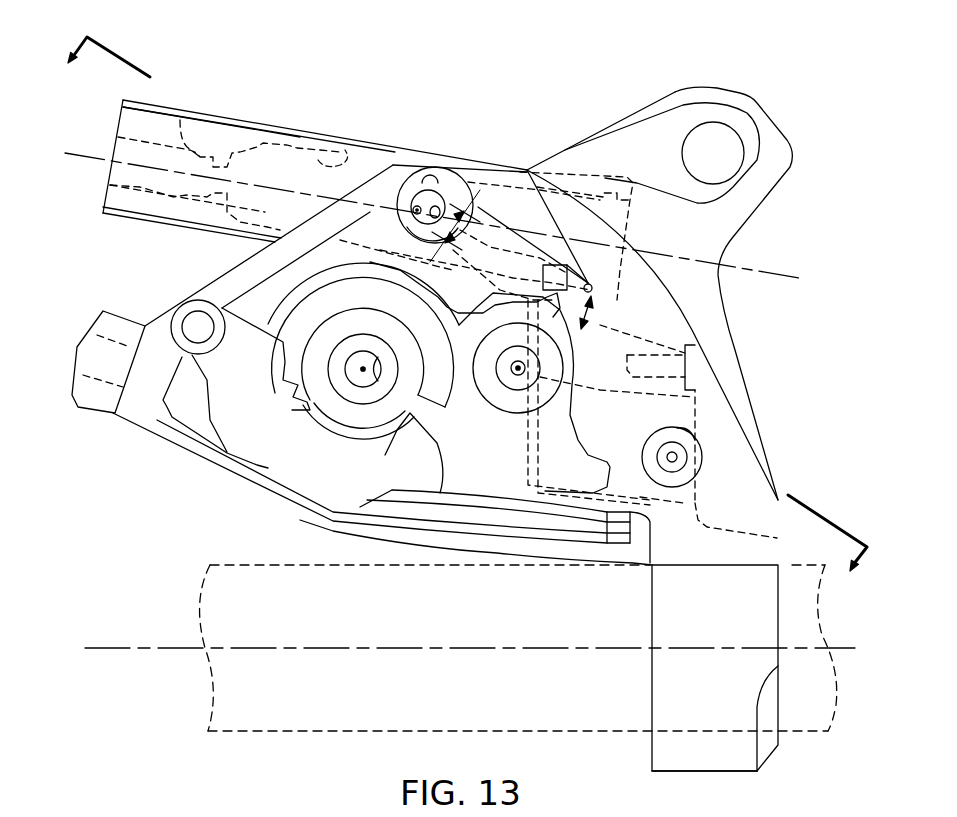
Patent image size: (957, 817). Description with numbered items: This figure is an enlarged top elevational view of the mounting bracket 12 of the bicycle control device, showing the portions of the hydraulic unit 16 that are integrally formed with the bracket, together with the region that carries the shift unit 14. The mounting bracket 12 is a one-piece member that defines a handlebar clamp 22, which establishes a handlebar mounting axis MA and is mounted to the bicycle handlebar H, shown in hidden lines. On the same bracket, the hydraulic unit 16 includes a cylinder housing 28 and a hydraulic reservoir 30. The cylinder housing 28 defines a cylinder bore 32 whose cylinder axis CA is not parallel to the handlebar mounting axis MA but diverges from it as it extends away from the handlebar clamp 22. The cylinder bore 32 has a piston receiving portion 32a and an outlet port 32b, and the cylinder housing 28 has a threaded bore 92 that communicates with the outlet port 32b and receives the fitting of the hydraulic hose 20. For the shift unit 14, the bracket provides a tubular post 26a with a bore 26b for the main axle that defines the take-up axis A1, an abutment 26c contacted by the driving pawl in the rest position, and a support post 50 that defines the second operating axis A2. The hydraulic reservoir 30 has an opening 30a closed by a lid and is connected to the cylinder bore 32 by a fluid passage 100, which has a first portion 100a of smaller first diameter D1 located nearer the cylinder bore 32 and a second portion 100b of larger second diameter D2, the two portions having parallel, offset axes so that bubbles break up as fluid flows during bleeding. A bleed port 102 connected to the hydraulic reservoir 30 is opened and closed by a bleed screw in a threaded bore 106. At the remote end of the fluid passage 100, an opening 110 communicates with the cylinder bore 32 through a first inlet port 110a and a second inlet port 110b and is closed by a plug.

The mounting bracket 12 is at (640, 683).
The shift unit 14 is at (458, 323).
The hydraulic unit 16 is at (225, 104).
The hydraulic hose 20 is at (197, 463).
The handlebar clamp 22 is at (715, 773).
The tubular post 26a is at (337, 373).
The bore 26b is at (373, 380).
The abutment 26c is at (297, 412).
The cylinder housing 28 is at (258, 123).
The hydraulic reservoir 30 is at (678, 520).
The opening 30a is at (698, 391).
The cylinder bore 32 is at (302, 142).
The piston receiving portion 32a is at (344, 160).
The outlet port 32b is at (180, 120).
The support post 50 is at (499, 415).
The threaded bore 92 is at (147, 193).
The fluid passage 100 is at (730, 305).
The first portion 100a is at (397, 221).
The second portion 100b is at (547, 227).
The bleed port 102 is at (674, 457).
The threaded bore 106 is at (694, 443).
The opening 110 is at (434, 177).
The first inlet port 110a is at (417, 206).
The second inlet port 110b is at (436, 206).
The take-up axis A1 is at (363, 371).
The second operating axis A2 is at (518, 368).
The cylinder axis CA is at (75, 157).
The first diameter D1 is at (480, 190).
The second diameter D2 is at (597, 287).
The bicycle handlebar H is at (242, 563).
The handlebar mounting axis MA is at (113, 652).